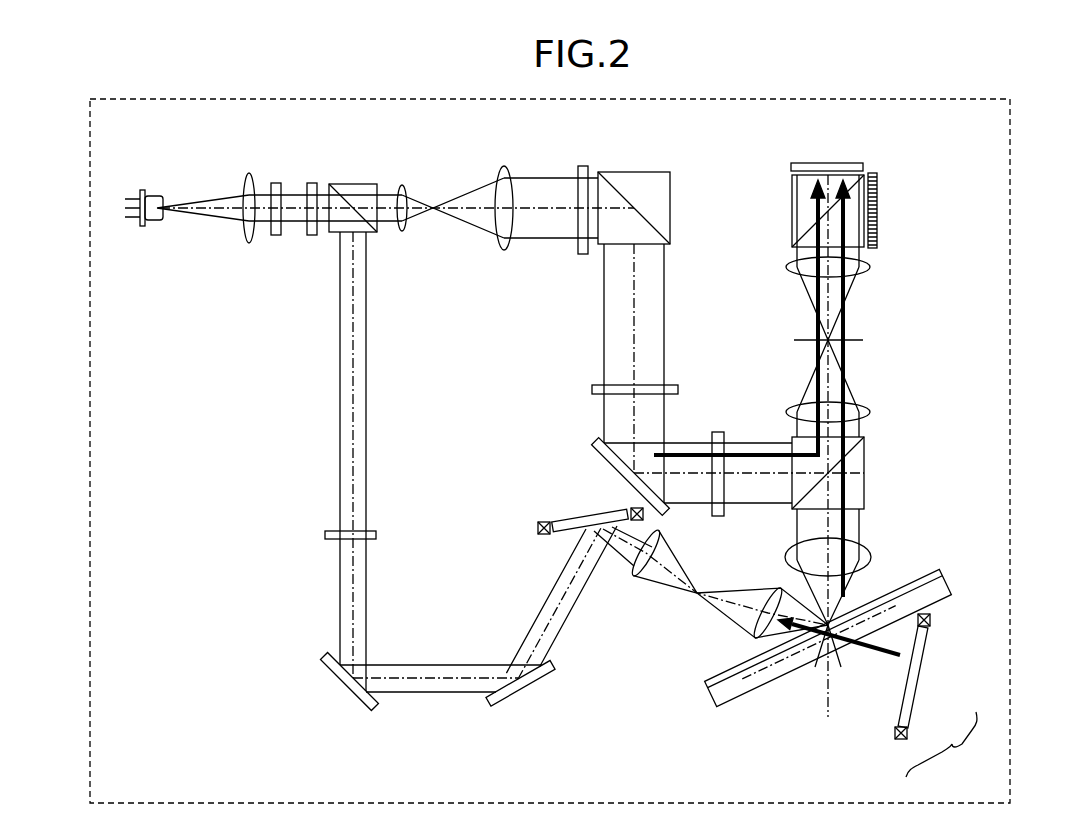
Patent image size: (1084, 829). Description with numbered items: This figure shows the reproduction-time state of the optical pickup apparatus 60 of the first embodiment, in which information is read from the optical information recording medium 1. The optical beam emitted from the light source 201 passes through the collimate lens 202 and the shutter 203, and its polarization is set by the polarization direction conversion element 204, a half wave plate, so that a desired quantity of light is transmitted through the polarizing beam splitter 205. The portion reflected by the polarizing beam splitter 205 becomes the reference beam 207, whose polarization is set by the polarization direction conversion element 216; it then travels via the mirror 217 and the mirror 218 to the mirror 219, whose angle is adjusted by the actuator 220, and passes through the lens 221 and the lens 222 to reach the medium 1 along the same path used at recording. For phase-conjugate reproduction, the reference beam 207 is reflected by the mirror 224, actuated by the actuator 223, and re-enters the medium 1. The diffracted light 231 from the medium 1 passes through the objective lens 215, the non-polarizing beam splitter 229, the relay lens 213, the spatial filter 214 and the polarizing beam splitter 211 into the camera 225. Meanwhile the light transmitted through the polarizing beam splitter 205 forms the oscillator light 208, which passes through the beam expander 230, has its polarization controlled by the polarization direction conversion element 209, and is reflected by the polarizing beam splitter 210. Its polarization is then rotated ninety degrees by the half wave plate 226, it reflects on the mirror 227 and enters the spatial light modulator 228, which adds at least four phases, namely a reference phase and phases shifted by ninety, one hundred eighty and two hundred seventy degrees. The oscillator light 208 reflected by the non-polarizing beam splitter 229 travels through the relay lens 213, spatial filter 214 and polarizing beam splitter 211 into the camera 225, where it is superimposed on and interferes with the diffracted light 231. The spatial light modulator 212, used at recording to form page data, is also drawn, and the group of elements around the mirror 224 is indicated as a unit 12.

The optical information recording medium 1 is at (707, 698).
The detection unit 12 is at (944, 749).
The optical pickup apparatus 60 is at (1008, 352).
The light source 201 is at (160, 194).
The collimate lens 202 is at (252, 173).
The shutter 203 is at (276, 182).
The polarization direction conversion element 204 is at (312, 182).
The polarizing beam splitter 205 is at (330, 231).
The reference beam 207 is at (366, 331).
The oscillator light 208 is at (604, 328).
The polarization direction conversion element 209 is at (583, 166).
The polarizing beam splitter 210 is at (653, 190).
The polarizing beam splitter 211 is at (803, 193).
The spatial light modulator 212 is at (878, 218).
The relay lens 213 is at (773, 263).
The spatial filter 214 is at (863, 340).
The objective lens 215 is at (867, 563).
The polarization direction conversion element 216 is at (325, 534).
The mirror 217 is at (343, 690).
The mirror 218 is at (512, 704).
The mirror 219 is at (567, 524).
The actuator 220 is at (538, 526).
The lens 221 is at (635, 578).
The lens 222 is at (768, 586).
The actuator 223 is at (896, 741).
The mirror 224 is at (918, 676).
The camera 225 is at (837, 163).
The half wave plate 226 is at (592, 390).
The mirror 227 is at (596, 444).
The spatial light modulator 228 is at (716, 432).
The non-polarizing beam splitter 229 is at (864, 476).
The beam expander 230 is at (502, 158).
The diffracted light 231 is at (852, 522).